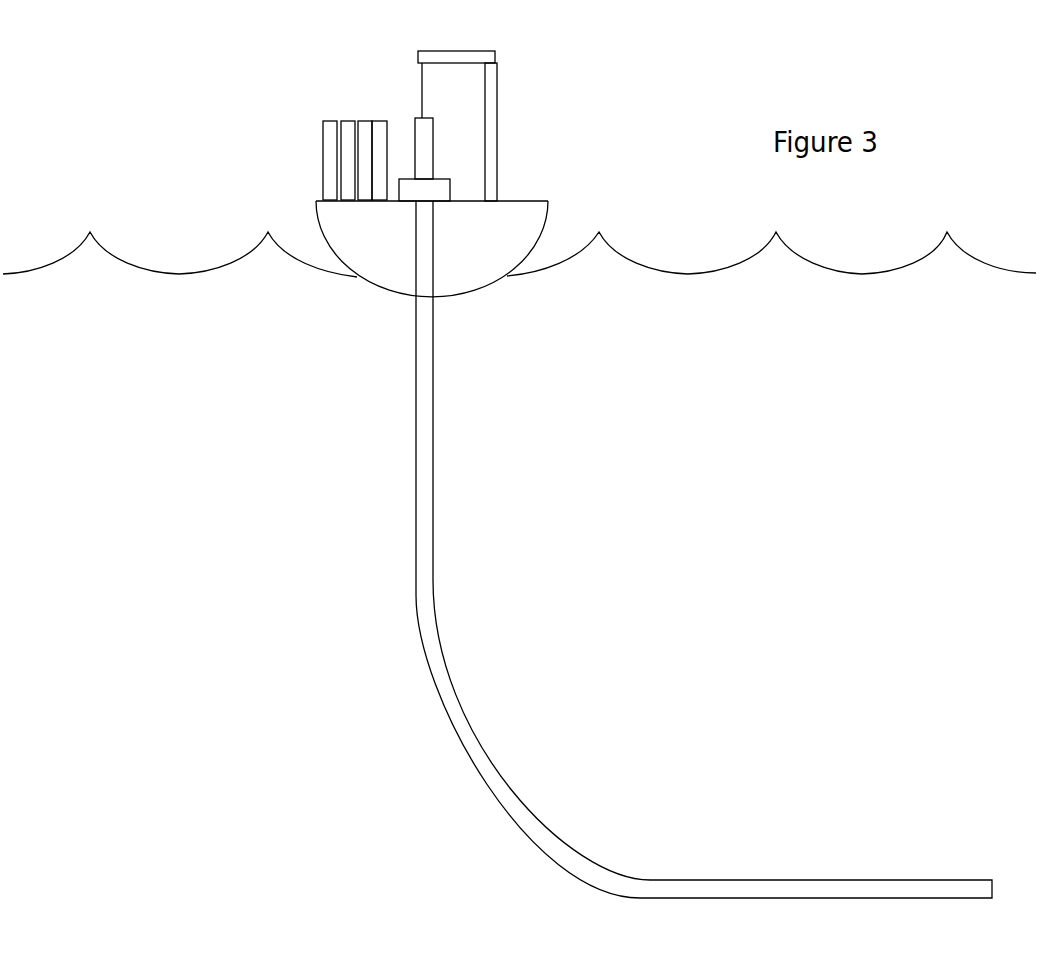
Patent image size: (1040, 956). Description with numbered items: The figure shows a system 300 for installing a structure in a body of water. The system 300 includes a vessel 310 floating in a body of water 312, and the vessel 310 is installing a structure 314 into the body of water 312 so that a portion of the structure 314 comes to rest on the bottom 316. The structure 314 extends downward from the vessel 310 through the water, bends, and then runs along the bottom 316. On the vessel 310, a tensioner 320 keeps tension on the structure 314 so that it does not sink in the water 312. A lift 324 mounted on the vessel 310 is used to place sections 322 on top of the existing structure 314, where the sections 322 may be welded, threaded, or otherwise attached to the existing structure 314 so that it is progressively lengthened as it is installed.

The system 300 is at (170, 161).
The vessel 310 is at (328, 240).
The body of water 312 is at (872, 357).
The structure 314 is at (424, 424).
The bottom 316 is at (188, 907).
The tensioner 320 is at (440, 186).
The sections 322 is at (352, 120).
The lift 324 is at (497, 85).